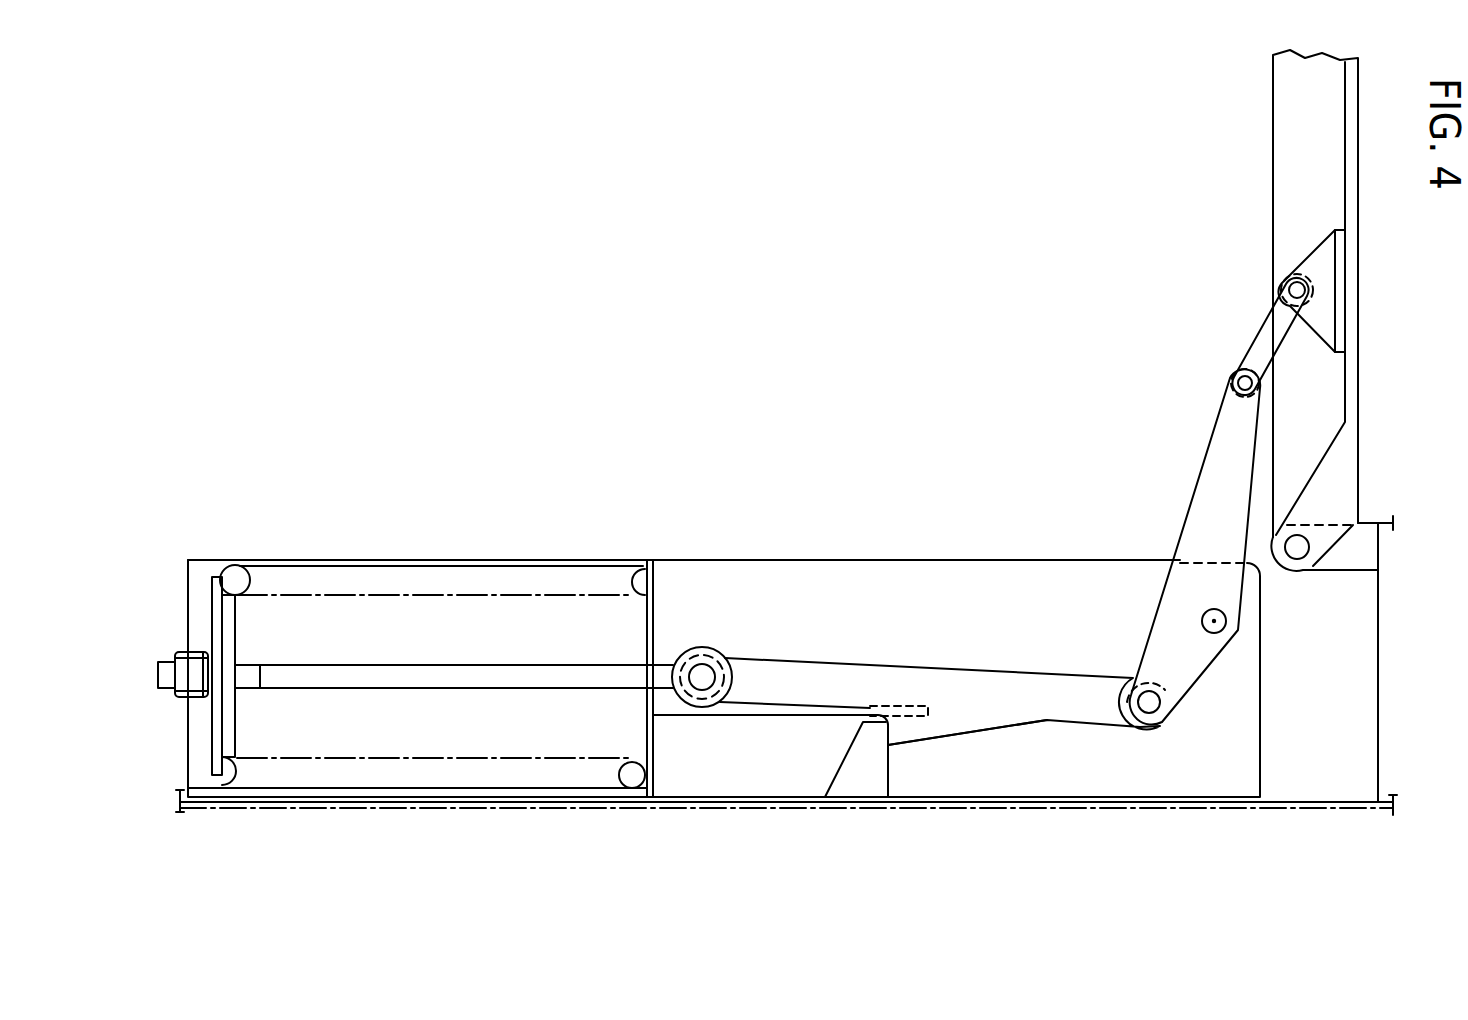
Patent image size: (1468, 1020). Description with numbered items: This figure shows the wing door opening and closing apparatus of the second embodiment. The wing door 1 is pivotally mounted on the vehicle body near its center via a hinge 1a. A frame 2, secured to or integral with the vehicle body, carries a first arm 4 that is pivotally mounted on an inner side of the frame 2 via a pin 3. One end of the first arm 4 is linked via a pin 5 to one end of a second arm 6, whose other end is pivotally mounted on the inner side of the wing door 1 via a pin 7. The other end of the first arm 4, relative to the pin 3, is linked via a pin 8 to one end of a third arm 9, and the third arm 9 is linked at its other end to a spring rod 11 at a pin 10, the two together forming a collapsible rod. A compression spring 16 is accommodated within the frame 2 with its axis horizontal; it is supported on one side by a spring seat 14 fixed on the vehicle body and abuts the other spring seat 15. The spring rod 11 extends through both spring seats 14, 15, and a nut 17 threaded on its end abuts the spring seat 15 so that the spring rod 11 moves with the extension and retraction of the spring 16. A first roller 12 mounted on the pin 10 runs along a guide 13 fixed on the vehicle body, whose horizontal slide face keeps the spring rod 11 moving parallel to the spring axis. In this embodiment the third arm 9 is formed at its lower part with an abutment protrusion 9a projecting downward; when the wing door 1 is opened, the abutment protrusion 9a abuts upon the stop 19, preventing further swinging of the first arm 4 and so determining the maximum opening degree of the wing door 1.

The wing door 1 is at (1273, 143).
The hinge 1a is at (1304, 596).
The frame 2 is at (837, 548).
The pin 3 is at (1202, 621).
The first arm 4 is at (1203, 512).
The pin 5 is at (1238, 382).
The second arm 6 is at (1268, 326).
The pin 7 is at (1288, 287).
The pin 8 is at (1172, 716).
The third arm 9 is at (987, 665).
The abutment protrusion 9a is at (905, 731).
The pin 10 is at (699, 664).
The spring rod 11 is at (467, 664).
The first roller 12 is at (723, 656).
The guide 13 is at (708, 717).
The spring seat 14 is at (657, 608).
The spring seat 15 is at (237, 637).
The spring 16 is at (377, 575).
The nut 17 is at (168, 652).
The stop 19 is at (870, 777).